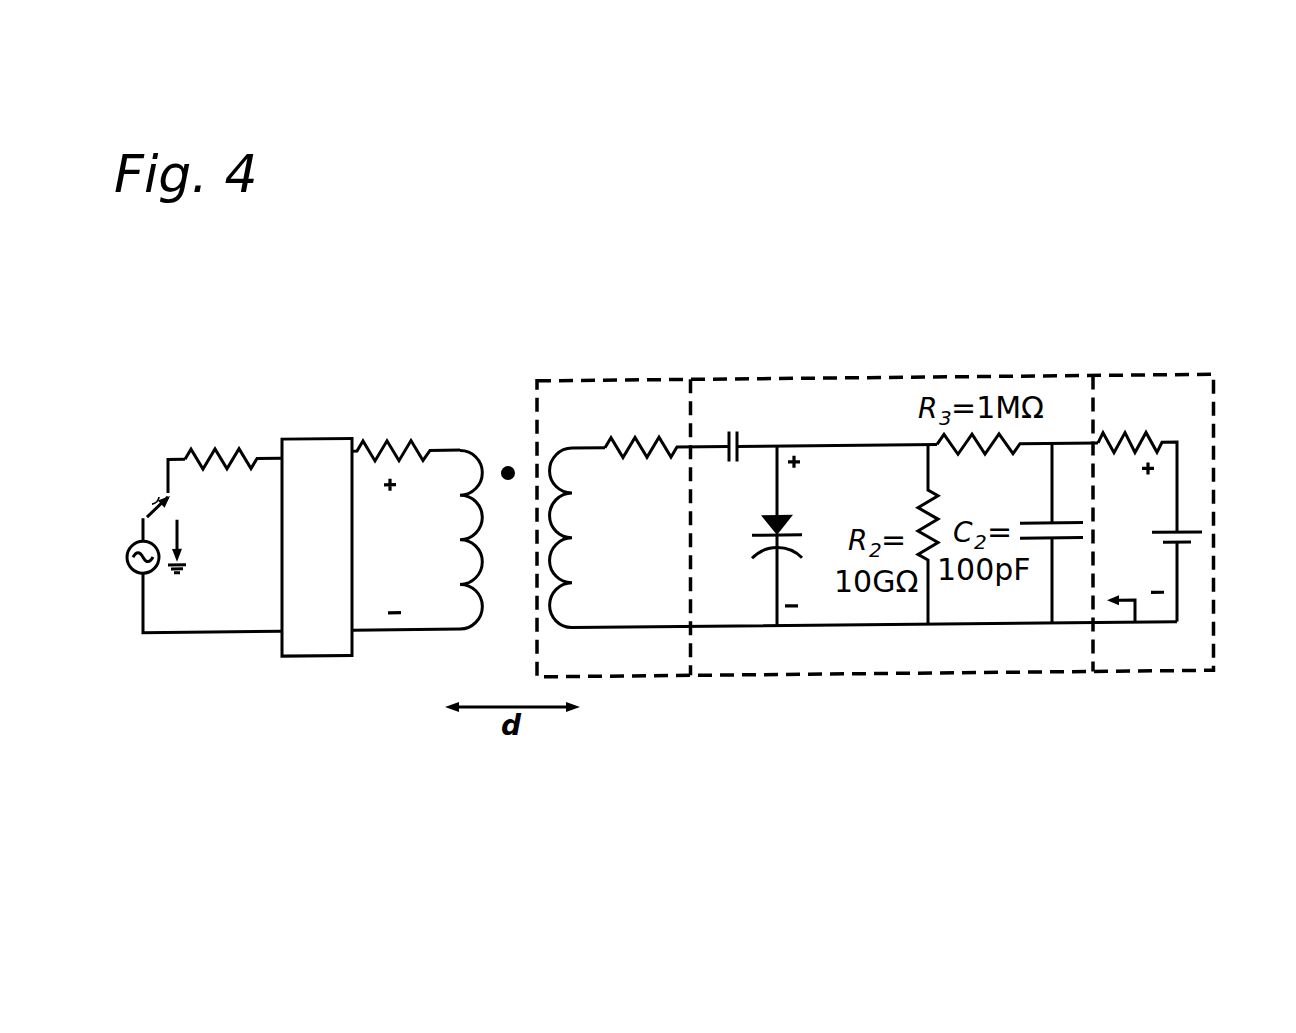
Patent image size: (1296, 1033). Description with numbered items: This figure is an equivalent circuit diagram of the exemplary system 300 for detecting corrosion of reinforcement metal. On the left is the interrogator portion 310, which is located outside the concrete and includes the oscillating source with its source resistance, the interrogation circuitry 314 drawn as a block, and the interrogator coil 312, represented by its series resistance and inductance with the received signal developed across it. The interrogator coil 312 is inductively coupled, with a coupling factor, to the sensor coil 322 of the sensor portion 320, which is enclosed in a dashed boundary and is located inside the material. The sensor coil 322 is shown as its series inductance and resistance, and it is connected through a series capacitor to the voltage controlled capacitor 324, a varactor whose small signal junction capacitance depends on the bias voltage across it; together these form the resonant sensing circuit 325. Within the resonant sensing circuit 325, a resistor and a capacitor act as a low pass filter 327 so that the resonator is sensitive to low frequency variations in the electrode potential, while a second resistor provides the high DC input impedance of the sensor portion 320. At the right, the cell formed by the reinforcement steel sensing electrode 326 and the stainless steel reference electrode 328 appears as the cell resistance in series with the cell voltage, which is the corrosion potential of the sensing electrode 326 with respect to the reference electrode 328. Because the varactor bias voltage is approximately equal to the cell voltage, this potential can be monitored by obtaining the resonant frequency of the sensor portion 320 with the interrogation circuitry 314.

The system 300 is at (338, 236).
The interrogator portion 310 is at (386, 288).
The interrogator coil 312 is at (473, 450).
The interrogation circuitry 314 is at (311, 361).
The sensor portion 320 is at (838, 302).
The sensor coil 322 is at (563, 627).
The voltage controlled capacitor 324 is at (778, 540).
The resonant sensing circuit 325 is at (844, 410).
The reinforcement steel sensing electrode 326 is at (1180, 535).
The low pass filter 327 is at (1015, 637).
The stainless steel reference electrode 328 is at (1182, 544).